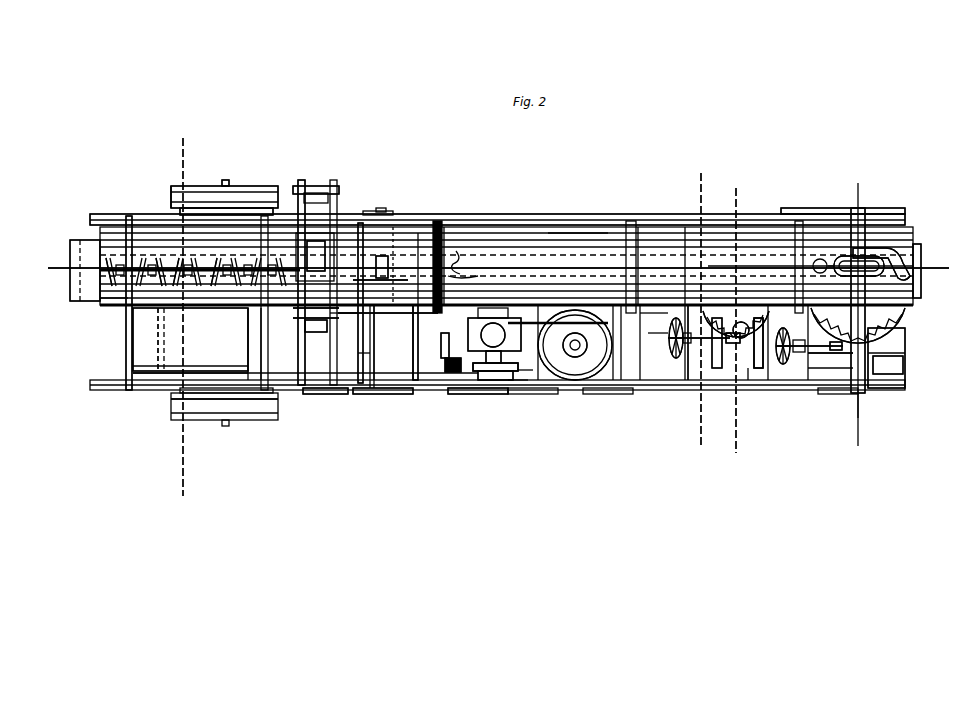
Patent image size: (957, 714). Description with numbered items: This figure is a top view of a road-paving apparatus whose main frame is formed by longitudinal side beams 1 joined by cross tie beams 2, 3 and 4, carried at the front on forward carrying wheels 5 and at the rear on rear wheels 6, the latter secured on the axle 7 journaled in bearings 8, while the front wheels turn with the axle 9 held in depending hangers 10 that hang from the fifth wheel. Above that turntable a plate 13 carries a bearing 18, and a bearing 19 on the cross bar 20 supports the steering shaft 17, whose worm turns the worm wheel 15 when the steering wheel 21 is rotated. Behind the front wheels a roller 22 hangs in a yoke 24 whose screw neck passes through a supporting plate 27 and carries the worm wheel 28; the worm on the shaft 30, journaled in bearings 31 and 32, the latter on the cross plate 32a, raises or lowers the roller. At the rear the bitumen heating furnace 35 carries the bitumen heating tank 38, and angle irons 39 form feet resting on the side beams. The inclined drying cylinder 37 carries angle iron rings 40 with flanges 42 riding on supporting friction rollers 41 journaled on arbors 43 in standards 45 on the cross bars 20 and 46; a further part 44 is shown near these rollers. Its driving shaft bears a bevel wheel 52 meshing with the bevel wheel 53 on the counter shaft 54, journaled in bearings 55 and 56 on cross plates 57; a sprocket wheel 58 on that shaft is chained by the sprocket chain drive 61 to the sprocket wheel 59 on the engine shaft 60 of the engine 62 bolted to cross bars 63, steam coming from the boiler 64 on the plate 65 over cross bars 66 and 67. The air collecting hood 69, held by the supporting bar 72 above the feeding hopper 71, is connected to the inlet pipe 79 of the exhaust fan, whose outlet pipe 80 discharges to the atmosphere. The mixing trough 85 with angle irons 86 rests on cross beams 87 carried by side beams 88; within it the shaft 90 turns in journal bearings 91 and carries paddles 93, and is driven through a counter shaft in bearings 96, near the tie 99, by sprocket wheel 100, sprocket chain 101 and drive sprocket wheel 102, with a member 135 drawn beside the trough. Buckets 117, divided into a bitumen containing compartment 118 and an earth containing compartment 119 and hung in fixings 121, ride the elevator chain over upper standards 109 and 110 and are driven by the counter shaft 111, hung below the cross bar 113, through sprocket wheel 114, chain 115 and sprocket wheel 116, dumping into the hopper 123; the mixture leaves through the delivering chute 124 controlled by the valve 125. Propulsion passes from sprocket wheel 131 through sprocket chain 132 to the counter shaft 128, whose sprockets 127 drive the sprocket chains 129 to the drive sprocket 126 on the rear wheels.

The side beams 1 is at (673, 217).
The cross tie beam 2 is at (897, 371).
The cross tie beam 3 is at (800, 378).
The cross tie beam 4 is at (180, 318).
The forward carrying wheels 5 is at (828, 403).
The rear wheels 6 is at (228, 190).
The axle 7 is at (219, 172).
The bearings 8 is at (858, 312).
The axle 9 is at (851, 412).
The depending hangers 10 is at (736, 320).
The plate 13 is at (880, 345).
The worm wheel 15 is at (880, 325).
The steering shaft 17 is at (837, 360).
The bearing 18 is at (826, 343).
The bearing 19 is at (770, 345).
The cross bar 20 is at (783, 345).
The steering wheel 21 is at (752, 378).
The roller 22 is at (755, 318).
The yoke 24 is at (744, 338).
The supporting plate 27 is at (742, 378).
The worm wheel 28 is at (736, 321).
The shaft 30 is at (711, 343).
The bearing 31 is at (726, 336).
The bearing 32 is at (666, 350).
The cross plate 32a is at (690, 375).
The bitumen heating furnace 35 is at (135, 378).
The drying cylinder 37 is at (560, 226).
The bitumen heating tank 38 is at (148, 335).
The angle irons 39 is at (160, 208).
The angle iron rings 40 is at (429, 214).
The supporting friction rollers 41 is at (220, 262).
The flanges 42 is at (437, 222).
The arbors 43 is at (189, 279).
The block 44 is at (377, 267).
The standards 45 is at (386, 258).
The cross bar 46 is at (362, 212).
The bevel wheel 52 is at (457, 256).
The bevel wheel 53 is at (460, 268).
The counter shaft 54 is at (430, 332).
The bearing 55 is at (661, 336).
The bearing 56 is at (450, 376).
The cross plates 57 is at (478, 375).
The sprocket wheel 58 is at (437, 357).
The sprocket wheel 59 is at (525, 366).
The engine shaft 60 is at (518, 372).
The sprocket chain drive 61 is at (658, 330).
The engine 62 is at (493, 335).
The cross bars 63 is at (480, 372).
The boiler 64 is at (580, 345).
The plate 65 is at (654, 313).
The cross bar 66 is at (658, 325).
The cross bar 67 is at (497, 337).
The air collecting hood 69 is at (887, 218).
The feeding hopper 71 is at (914, 257).
The supporting bar 72 is at (838, 254).
The inlet pipe 79 is at (880, 236).
The outlet pipe 80 is at (785, 256).
The mixing trough 85 is at (95, 292).
The angle irons 86 is at (160, 210).
The cross beams 87 is at (121, 208).
The side beams 88 is at (100, 207).
The shaft 90 is at (200, 262).
The journal bearings 91 is at (98, 245).
The paddles 93 is at (372, 272).
The bearings 96 is at (344, 386).
The tie 99 is at (388, 324).
The sprocket wheel 100 is at (365, 406).
The sprocket chain 101 is at (391, 406).
The drive sprocket wheel 102 is at (512, 378).
The upper standard 109 is at (295, 176).
The upper standard 110 is at (327, 318).
The counter shaft 111 is at (390, 342).
The post 113 is at (405, 388).
The sprocket wheel 114 is at (322, 180).
The chain 115 is at (430, 342).
The sprocket wheel 116 is at (410, 225).
The buckets 117 is at (373, 360).
The bitumen containing compartment 118 is at (290, 312).
The earth containing compartment 119 is at (316, 334).
The fixings 121 is at (356, 347).
The hopper 123 is at (314, 255).
The delivering chute 124 is at (62, 263).
The valve 125 is at (325, 377).
The drive sprocket 126 is at (196, 392).
The sprockets 127 is at (372, 202).
The counter shaft 128 is at (194, 200).
The sprocket chains 129 is at (370, 204).
The sprocket wheel 131 is at (526, 390).
The sprocket chain 132 is at (420, 388).
The post 135 is at (255, 316).